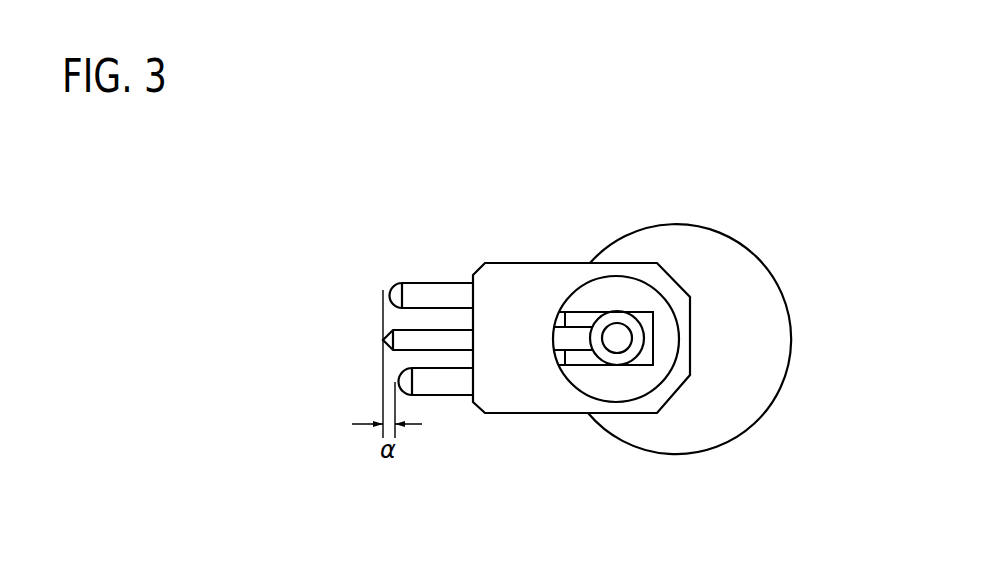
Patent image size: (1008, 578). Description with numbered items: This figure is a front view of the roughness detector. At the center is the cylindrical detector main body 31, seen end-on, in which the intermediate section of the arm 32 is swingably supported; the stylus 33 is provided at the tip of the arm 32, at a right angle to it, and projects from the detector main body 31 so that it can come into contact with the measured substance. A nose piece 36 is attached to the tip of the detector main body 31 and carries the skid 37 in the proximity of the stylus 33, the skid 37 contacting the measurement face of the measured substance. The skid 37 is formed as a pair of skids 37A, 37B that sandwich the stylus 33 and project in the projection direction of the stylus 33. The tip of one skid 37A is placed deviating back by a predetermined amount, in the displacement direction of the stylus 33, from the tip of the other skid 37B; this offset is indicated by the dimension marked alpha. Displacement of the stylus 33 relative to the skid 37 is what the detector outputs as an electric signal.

The detector main body 31 is at (745, 262).
The arm 32 is at (625, 337).
The stylus 33 is at (432, 332).
The nose piece 36 is at (532, 268).
The skid 37 is at (360, 335).
The skid 37A is at (385, 295).
The skid 37B is at (385, 379).